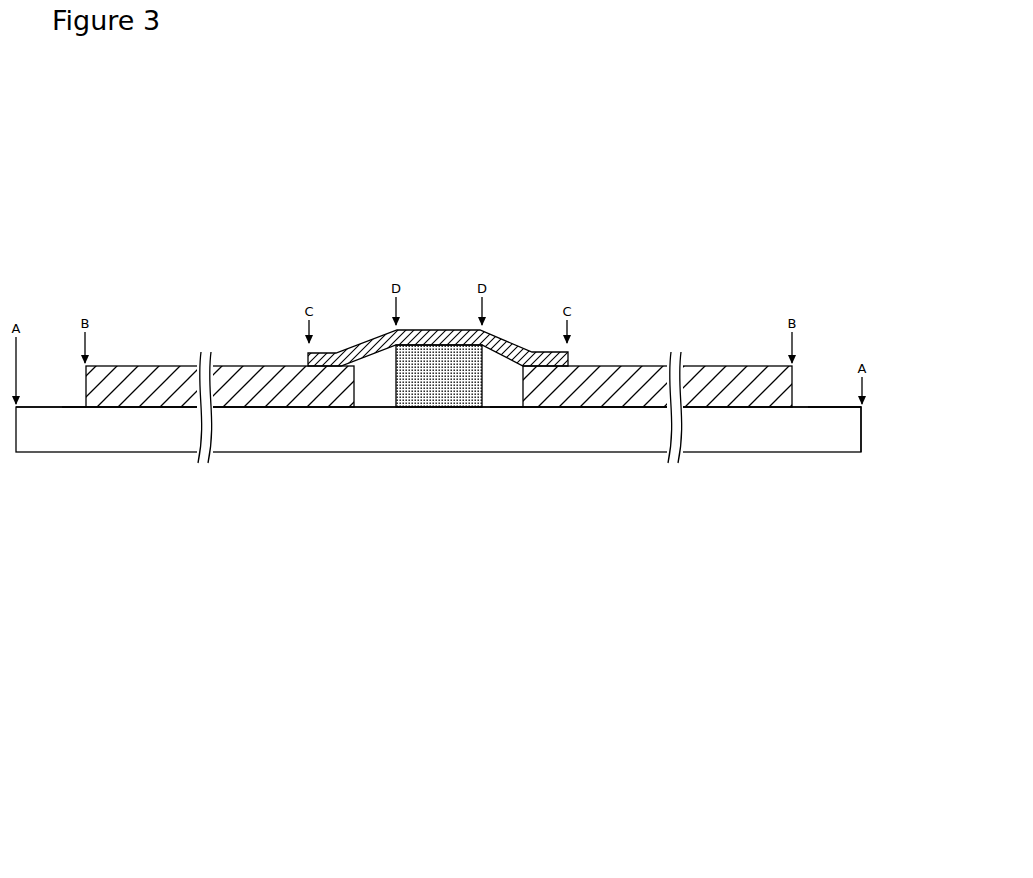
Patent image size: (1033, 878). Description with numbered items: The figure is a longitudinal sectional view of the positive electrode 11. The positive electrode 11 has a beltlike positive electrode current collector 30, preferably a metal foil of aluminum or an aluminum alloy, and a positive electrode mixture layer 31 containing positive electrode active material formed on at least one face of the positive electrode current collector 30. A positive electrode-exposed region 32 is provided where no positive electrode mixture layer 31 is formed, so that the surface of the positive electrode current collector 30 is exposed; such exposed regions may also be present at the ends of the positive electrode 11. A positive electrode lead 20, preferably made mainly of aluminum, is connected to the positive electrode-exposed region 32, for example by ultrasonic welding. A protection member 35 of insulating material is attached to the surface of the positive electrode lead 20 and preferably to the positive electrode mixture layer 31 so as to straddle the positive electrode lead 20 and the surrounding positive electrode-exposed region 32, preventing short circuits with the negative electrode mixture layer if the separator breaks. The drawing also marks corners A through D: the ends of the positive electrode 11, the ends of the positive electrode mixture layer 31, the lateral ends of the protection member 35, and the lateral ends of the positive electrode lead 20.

The positive electrode 11 is at (864, 415).
The positive electrode lead 20 is at (455, 400).
The positive electrode current collector 30 is at (853, 442).
The positive electrode mixture layer 31 is at (85, 374).
The positive electrode-exposed region 32 is at (62, 407).
The protection member 35 is at (499, 342).